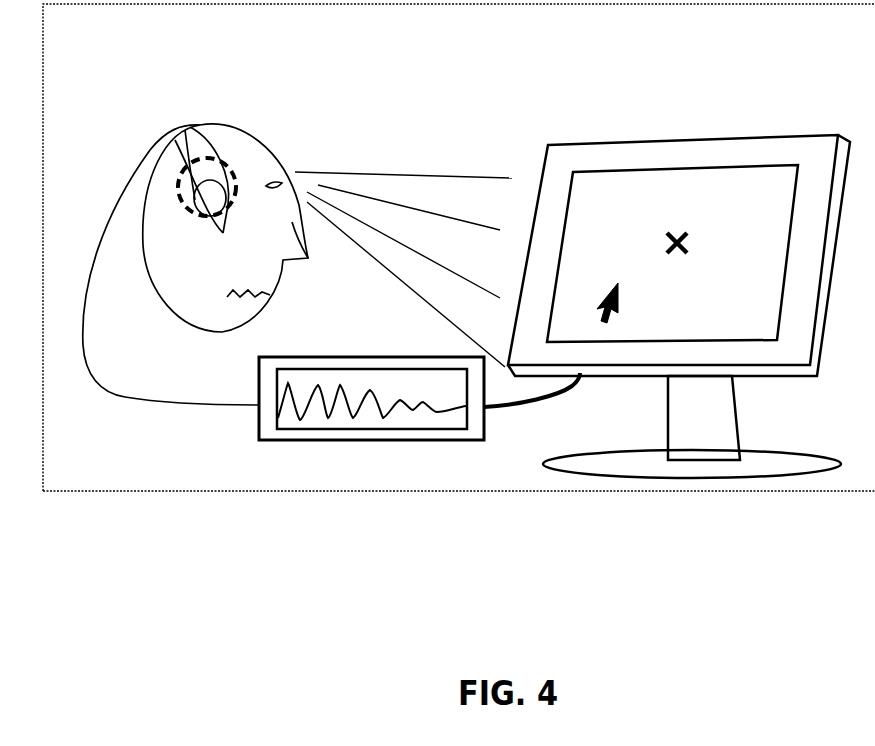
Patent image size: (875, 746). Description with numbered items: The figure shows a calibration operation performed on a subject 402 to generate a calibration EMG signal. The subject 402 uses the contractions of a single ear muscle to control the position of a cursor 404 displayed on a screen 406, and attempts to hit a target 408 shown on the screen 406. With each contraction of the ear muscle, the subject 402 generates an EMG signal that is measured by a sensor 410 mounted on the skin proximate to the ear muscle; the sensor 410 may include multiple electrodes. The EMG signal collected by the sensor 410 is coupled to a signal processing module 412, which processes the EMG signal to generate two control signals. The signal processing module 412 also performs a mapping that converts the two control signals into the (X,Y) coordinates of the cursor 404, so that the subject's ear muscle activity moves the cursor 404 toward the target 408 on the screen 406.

The subject 402 is at (272, 142).
The cursor 404 is at (613, 313).
The screen 406 is at (605, 183).
The target 408 is at (715, 217).
The sensor 410 is at (180, 177).
The signal processing module 412 is at (323, 443).